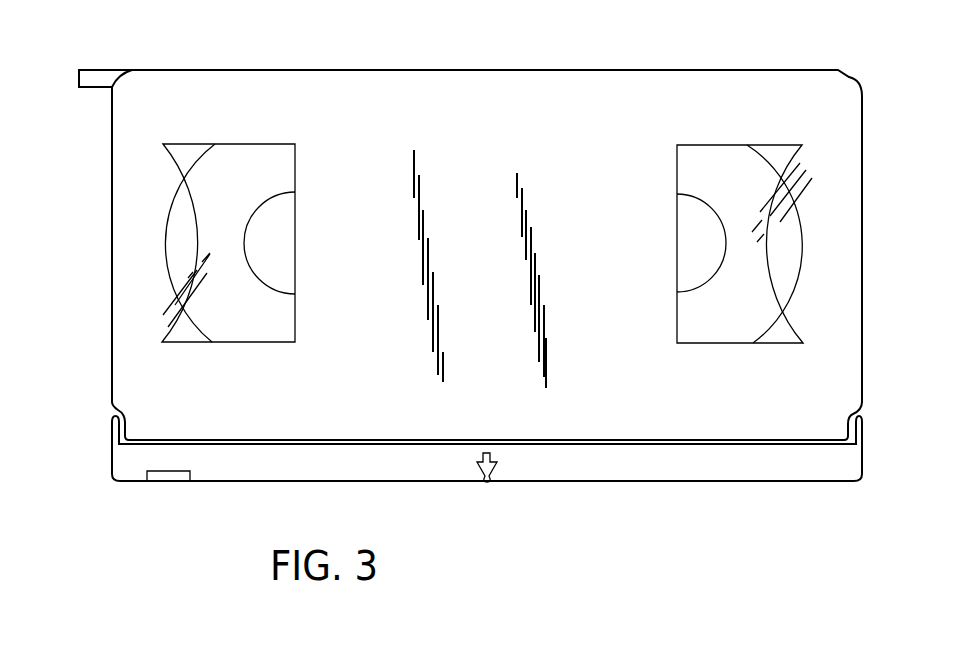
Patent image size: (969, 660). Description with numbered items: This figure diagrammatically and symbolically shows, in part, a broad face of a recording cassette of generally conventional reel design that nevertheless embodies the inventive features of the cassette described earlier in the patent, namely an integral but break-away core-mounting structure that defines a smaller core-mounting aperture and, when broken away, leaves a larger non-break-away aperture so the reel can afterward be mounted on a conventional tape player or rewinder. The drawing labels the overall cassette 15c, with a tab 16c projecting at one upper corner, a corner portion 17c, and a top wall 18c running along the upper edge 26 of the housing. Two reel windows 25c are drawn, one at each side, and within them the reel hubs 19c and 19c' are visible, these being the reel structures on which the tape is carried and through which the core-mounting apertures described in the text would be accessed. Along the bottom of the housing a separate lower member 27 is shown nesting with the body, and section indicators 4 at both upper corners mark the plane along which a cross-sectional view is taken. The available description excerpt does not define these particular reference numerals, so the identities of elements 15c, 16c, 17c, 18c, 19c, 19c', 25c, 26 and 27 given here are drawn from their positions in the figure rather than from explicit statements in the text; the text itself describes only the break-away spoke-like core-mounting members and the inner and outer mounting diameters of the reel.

The section line 4- 4 is at (117, 56).
The cassette housing 15c is at (455, 70).
The tab 16c is at (90, 88).
The corner portion 17c is at (113, 89).
The top wall 18c is at (632, 92).
The reel hub 19c is at (322, 243).
The reel hub 19c' is at (659, 243).
The reel window 25c is at (265, 160).
The top edge 26 is at (152, 85).
The bottom cover 27 is at (549, 482).